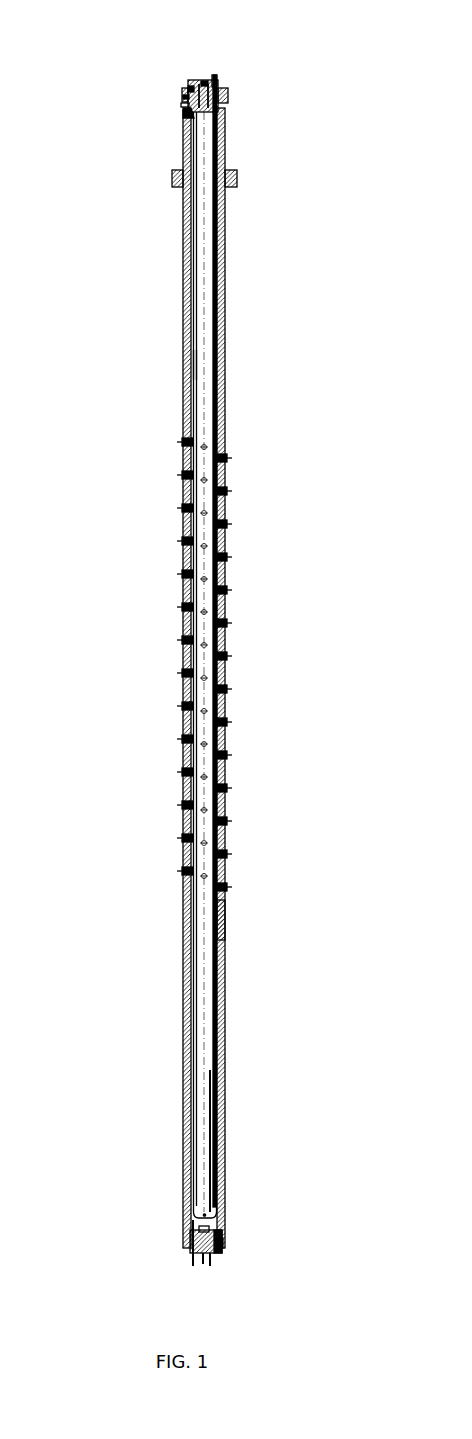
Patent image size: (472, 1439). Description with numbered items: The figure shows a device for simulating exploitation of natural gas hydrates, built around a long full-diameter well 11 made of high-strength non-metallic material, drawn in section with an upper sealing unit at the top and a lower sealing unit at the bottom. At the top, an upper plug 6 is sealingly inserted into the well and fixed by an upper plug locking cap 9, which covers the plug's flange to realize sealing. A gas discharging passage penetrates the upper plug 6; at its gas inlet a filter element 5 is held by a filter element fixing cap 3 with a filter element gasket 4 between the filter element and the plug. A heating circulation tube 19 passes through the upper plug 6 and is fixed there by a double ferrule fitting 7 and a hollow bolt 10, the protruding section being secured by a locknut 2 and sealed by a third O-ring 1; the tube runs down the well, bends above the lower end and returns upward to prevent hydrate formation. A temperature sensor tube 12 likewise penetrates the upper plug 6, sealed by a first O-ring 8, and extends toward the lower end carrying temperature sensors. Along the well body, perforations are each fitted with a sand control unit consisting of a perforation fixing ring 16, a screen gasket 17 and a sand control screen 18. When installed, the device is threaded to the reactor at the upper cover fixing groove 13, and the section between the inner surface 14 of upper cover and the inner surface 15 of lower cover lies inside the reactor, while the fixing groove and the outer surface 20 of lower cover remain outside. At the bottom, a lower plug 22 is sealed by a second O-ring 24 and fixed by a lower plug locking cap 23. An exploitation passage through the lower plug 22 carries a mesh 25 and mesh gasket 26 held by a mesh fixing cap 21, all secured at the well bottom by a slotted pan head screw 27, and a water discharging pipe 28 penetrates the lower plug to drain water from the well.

The third O-ring 1 is at (228, 92).
The locknut 2 is at (215, 83).
The filter element fixing cap 3 is at (204, 80).
The filter element gasket 4 is at (193, 80).
The filter element 5 is at (175, 54).
The upper plug 6 is at (188, 88).
The double ferrule fitting 7 is at (183, 90).
The first O-ring 8 is at (184, 98).
The upper plug locking cap 9 is at (183, 105).
The hollow bolt 10 is at (182, 108).
The full-diameter well 11 is at (186, 394).
The temperature sensor tube 12 is at (215, 502).
The upper cover fixing groove 13 is at (238, 178).
The inner surface of upper cover 14 is at (120, 364).
The inner surface of lower cover 15 is at (227, 920).
The perforation fixing ring 16 is at (187, 743).
The screen gasket 17 is at (52, 817).
The sand control screen 18 is at (52, 842).
The heating circulation tube 19 is at (185, 848).
The outer surface of lower cover 20 is at (226, 1065).
The mesh fixing cap 21 is at (192, 1253).
The lower plug 22 is at (205, 1253).
The lower plug locking cap 23 is at (217, 1253).
The second O-ring 24 is at (225, 1247).
The mesh 25 is at (218, 1232).
The mesh gasket 26 is at (280, 1182).
The slotted pan head screw 27 is at (203, 1230).
The water discharging pipe 28 is at (213, 1037).